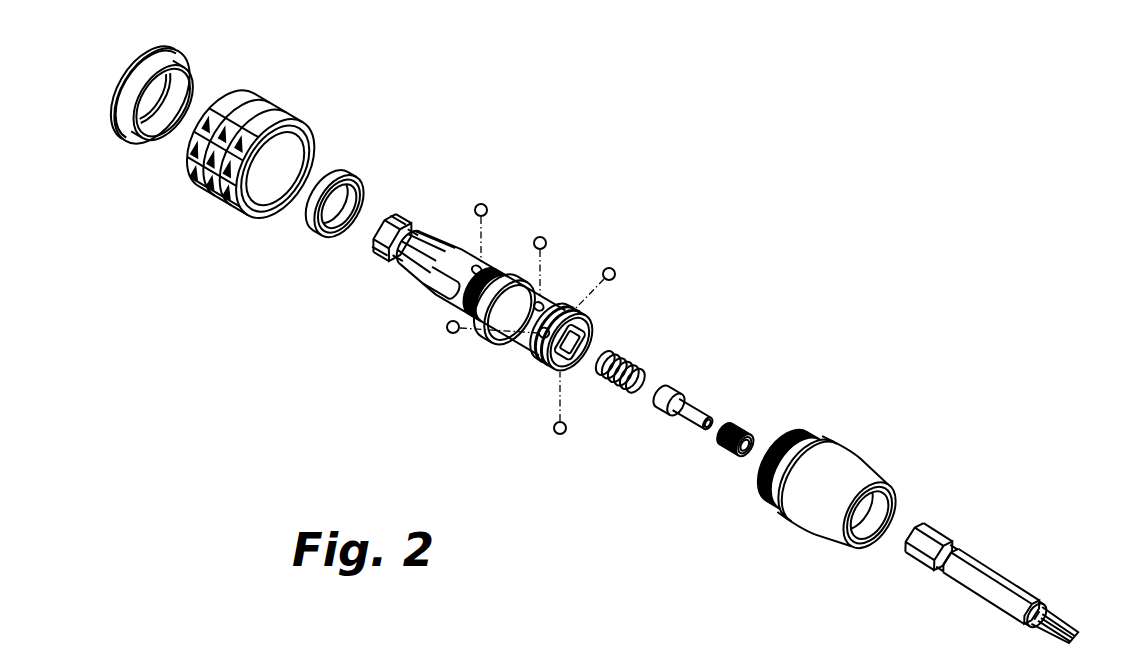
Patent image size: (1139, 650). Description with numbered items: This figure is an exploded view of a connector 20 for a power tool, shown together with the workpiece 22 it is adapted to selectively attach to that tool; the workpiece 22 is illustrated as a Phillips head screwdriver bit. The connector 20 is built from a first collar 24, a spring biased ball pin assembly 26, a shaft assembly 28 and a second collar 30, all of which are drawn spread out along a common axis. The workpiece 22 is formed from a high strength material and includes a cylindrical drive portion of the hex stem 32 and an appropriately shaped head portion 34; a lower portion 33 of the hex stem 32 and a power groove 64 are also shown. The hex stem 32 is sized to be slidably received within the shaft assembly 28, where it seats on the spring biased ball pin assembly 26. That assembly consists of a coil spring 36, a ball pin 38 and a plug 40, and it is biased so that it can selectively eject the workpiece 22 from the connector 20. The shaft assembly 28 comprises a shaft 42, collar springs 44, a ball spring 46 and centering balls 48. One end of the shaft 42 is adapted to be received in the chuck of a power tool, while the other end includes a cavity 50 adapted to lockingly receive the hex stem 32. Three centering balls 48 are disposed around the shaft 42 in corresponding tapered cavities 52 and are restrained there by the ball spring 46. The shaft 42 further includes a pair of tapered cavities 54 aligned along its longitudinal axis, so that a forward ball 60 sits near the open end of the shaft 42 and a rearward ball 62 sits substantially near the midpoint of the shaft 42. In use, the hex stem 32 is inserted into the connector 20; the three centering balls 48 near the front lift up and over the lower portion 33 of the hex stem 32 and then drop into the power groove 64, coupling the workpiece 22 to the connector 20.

The connector 20 is at (793, 274).
The workpiece 22 is at (1003, 569).
The first collar 24 is at (866, 455).
The spring biased ball pin assembly 26 is at (655, 420).
The shaft assembly 28 is at (448, 307).
The second collar 30 is at (138, 147).
The hex stem 32 is at (977, 583).
The lower portion 33 is at (910, 557).
The head portion 34 is at (1067, 617).
The coil spring 36 is at (632, 356).
The ball pin 38 is at (697, 390).
The plug 40 is at (743, 423).
The shaft 42 is at (450, 231).
The collar springs 44 is at (530, 325).
The ball spring 46 is at (574, 317).
The centering balls 48 is at (615, 273).
The cavity 50 is at (580, 343).
The tapered cavities 52 is at (542, 345).
The tapered cavities 54 is at (542, 301).
The forward ball 60 is at (545, 237).
The rearward ball 62 is at (489, 205).
The power groove 64 is at (950, 546).